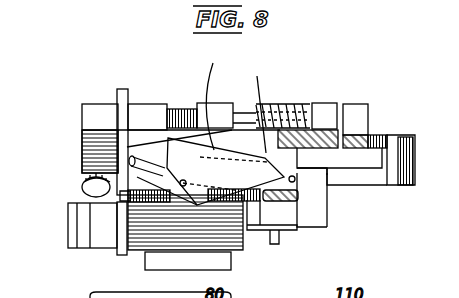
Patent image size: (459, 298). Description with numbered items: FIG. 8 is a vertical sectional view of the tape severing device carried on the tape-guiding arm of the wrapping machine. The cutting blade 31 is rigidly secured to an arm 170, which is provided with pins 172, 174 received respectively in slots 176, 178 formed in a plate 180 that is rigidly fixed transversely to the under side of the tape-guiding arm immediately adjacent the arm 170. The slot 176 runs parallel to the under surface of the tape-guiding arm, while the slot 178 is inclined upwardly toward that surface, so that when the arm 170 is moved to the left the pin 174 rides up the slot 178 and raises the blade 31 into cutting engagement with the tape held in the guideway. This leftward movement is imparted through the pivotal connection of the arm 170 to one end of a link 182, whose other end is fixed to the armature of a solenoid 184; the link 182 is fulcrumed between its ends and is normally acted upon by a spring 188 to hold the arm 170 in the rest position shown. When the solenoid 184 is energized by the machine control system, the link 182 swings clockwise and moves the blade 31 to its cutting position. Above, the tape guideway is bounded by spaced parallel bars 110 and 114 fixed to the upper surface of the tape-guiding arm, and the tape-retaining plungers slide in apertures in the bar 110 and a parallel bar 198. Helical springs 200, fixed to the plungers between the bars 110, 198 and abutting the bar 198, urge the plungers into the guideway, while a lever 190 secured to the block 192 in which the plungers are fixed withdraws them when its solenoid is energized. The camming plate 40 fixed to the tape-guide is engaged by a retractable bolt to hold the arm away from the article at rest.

The cutting blade 31 is at (184, 150).
The camming plate 40 is at (86, 163).
The bar 110 is at (224, 113).
The bar 114 is at (145, 110).
The arm 170 is at (294, 175).
The pin 172 is at (283, 100).
The pin 174 is at (186, 183).
The slot 176 is at (221, 60).
The slot 178 is at (132, 177).
The plate 180 is at (145, 150).
The link 182 is at (298, 182).
The solenoid 184 is at (242, 249).
The spring 188 is at (153, 203).
The lever 190 is at (368, 133).
The block 192 is at (358, 108).
The bar 198 is at (324, 114).
The helical springs 200 is at (296, 103).